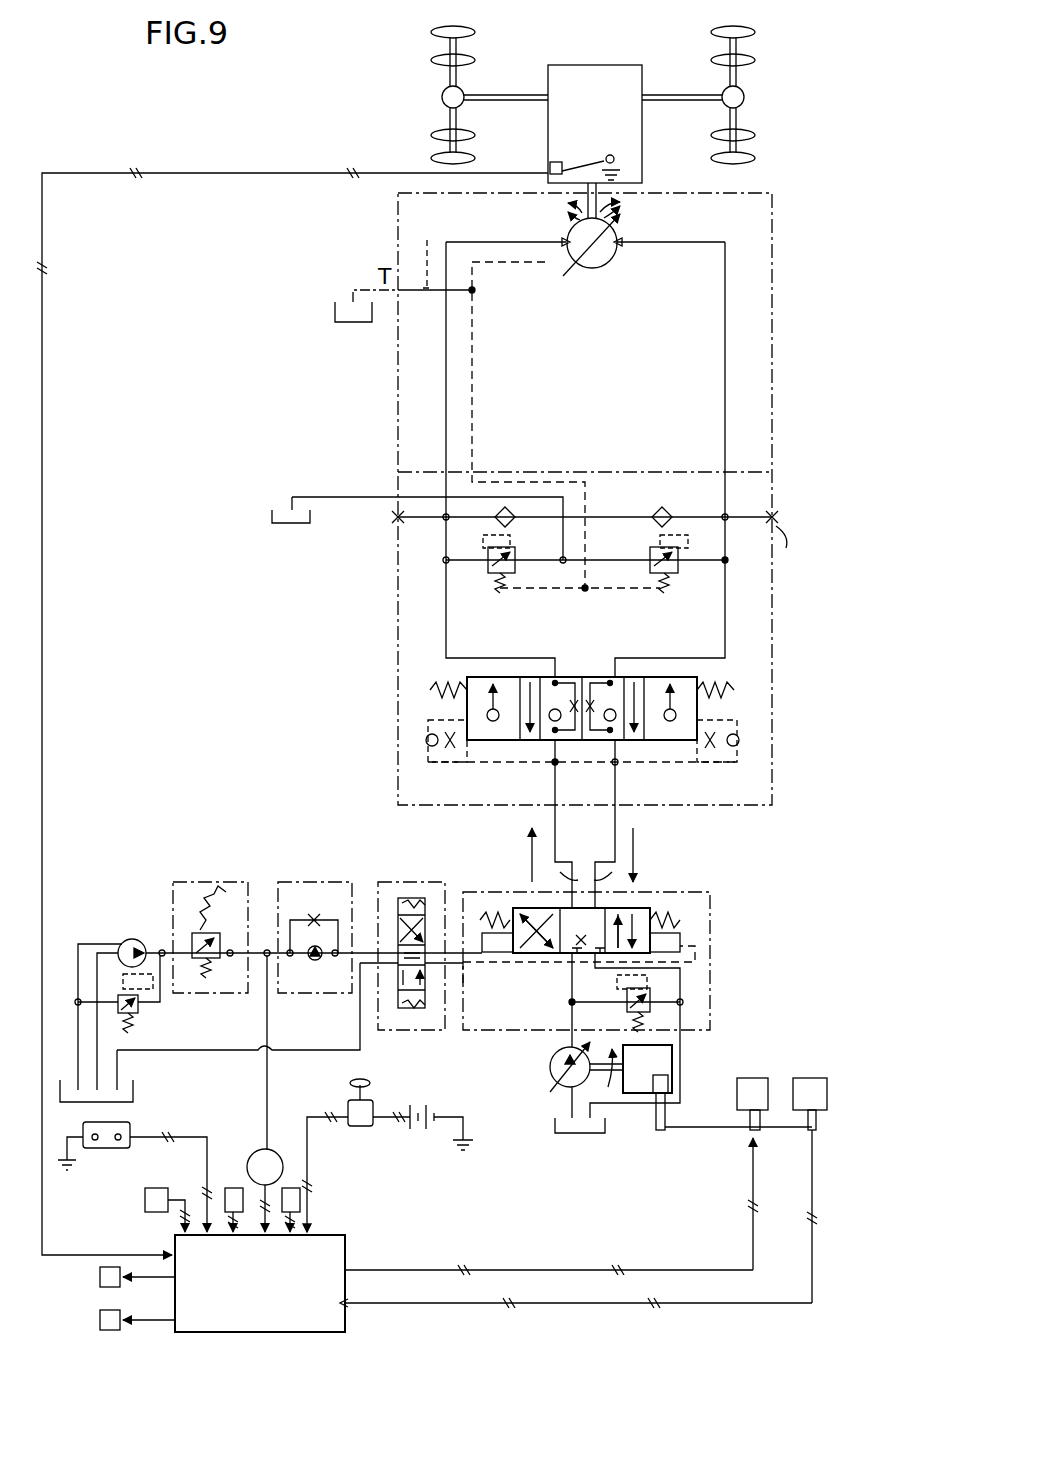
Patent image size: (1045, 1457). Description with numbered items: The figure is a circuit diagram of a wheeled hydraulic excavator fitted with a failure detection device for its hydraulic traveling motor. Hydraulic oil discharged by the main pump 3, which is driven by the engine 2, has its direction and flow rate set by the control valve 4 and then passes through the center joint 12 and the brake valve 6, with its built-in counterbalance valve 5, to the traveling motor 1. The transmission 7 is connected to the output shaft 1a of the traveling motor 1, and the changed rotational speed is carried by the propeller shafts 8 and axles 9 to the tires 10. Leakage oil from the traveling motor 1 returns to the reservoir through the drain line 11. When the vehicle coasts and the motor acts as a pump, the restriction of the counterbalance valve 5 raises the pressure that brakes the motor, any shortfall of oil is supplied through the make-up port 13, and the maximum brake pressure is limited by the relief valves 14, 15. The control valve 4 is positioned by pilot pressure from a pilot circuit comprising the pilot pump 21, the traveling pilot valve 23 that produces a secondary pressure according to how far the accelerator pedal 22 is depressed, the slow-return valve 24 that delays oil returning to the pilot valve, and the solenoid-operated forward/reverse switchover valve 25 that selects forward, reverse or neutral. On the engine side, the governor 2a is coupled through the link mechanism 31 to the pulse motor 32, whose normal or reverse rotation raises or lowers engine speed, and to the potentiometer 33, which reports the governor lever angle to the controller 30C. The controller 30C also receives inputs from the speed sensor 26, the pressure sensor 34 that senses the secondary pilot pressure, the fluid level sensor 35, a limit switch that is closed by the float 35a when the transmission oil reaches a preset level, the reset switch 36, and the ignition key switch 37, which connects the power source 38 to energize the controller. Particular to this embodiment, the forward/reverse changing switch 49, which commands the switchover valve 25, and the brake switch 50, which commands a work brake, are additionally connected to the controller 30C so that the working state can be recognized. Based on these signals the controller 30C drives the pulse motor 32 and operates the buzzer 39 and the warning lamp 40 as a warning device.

The traveling motor 1 is at (594, 264).
The output shaft 1a is at (570, 205).
The engine 2 is at (672, 1058).
The governor 2a is at (668, 1086).
The main pump 3 is at (554, 1084).
The control valve 4 is at (694, 890).
The counterbalance valve 5 is at (713, 684).
The brake valve 6 is at (398, 640).
The transmission 7 is at (606, 65).
The propeller shafts 8 is at (537, 94).
The axles 9 is at (442, 100).
The tires 10 is at (476, 33).
The drain line 11 is at (421, 251).
The center joint 12 is at (628, 884).
The make-up port 13 is at (398, 480).
The relief valve 14 is at (498, 582).
The relief valve 15 is at (680, 575).
The pilot pump 21 is at (130, 940).
The accelerator pedal 22 is at (226, 892).
The traveling pilot valve 23 is at (244, 882).
The slow-return valve 24 is at (278, 993).
The forward/reverse switchover valve 25 is at (396, 1030).
The speed sensor 26 is at (156, 1188).
The controller 30C is at (345, 1252).
The link mechanism 31 is at (654, 1120).
The pulse motor 32 is at (751, 1078).
The potentiometer 33 is at (808, 1078).
The pressure sensor 34 is at (268, 1148).
The fluid level sensor 35 is at (550, 160).
The float 35a is at (614, 158).
The reset switch 36 is at (108, 1148).
The ignition key switch 37 is at (364, 1127).
The power source 38 is at (426, 1135).
The buzzer 39 is at (100, 1275).
The warning lamp 40 is at (100, 1317).
The forward/reverse changing switch 49 is at (231, 1188).
The brake switch 50 is at (300, 1195).